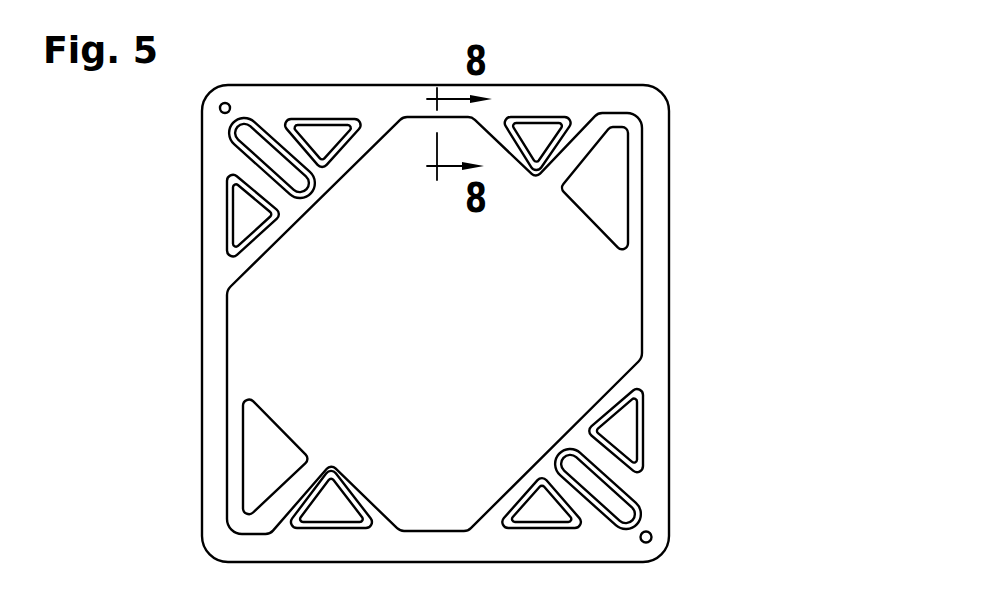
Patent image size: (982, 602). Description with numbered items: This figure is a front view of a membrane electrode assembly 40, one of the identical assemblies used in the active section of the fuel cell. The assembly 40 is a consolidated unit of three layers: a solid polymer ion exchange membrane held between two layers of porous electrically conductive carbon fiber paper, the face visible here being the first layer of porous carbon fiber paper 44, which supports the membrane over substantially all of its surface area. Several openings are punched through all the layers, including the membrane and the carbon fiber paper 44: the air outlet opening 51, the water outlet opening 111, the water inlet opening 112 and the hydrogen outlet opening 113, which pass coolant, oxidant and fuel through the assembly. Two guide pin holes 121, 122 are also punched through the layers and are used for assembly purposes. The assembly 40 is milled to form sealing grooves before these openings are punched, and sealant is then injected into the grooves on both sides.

The membrane electrode assembly 40 is at (670, 87).
The porous carbon fiber paper 44 is at (612, 303).
The opening (air outlet) 51 is at (265, 471).
The opening (water outlet) 111 is at (233, 138).
The opening (water inlet) 112 is at (308, 133).
The opening (hydrogen outlet) 113 is at (622, 422).
The guide pin hole 121 is at (221, 109).
The guide pin hole 122 is at (652, 530).